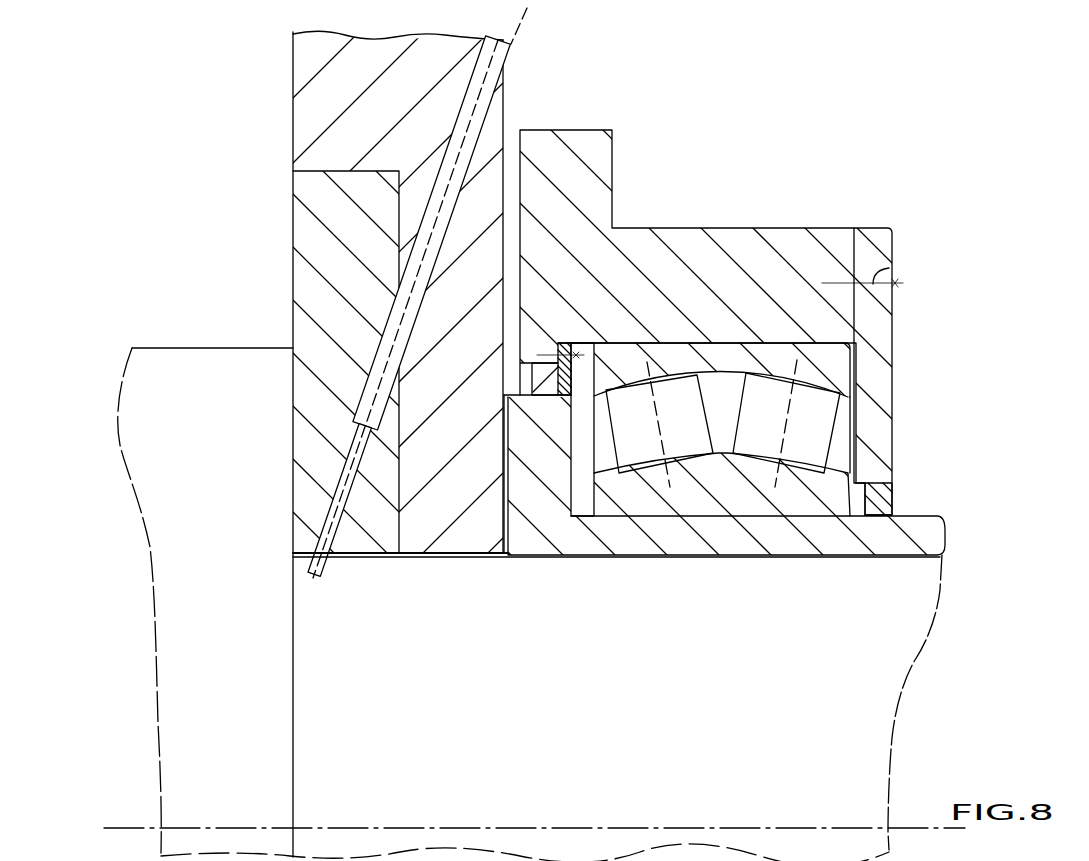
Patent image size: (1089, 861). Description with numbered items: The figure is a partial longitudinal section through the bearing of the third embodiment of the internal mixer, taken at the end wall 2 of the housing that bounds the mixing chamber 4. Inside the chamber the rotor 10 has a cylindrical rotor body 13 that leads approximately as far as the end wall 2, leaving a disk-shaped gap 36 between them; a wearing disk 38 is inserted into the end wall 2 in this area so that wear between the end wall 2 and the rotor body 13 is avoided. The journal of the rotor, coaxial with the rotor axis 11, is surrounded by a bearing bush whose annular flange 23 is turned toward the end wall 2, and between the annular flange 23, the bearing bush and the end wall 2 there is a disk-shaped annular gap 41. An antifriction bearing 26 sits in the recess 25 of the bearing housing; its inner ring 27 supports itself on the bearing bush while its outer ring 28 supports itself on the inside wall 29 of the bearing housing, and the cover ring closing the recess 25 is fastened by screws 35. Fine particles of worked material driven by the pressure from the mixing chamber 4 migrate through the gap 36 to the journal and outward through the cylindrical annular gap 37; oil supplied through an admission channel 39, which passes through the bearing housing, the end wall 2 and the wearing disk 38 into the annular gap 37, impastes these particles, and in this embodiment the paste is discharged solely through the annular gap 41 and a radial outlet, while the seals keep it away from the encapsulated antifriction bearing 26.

The end wall 2 is at (335, 77).
The wearing disk 38 is at (330, 207).
The mixing chamber 4 is at (186, 273).
The rotor 10 is at (150, 340).
The gap 36 is at (293, 348).
The rotor body 13 is at (190, 497).
The admission channel 39 is at (506, 68).
The outer ring 28 is at (680, 355).
The inside wall 29 is at (735, 340).
The screw 35 is at (888, 268).
The antifriction bearing 26 is at (815, 380).
The recess 25 is at (583, 430).
The annular gap 37 is at (419, 553).
The annular gap 41 is at (507, 557).
The annular flange 23 is at (548, 495).
The inner ring 27 is at (789, 490).
The axis 11 is at (630, 828).